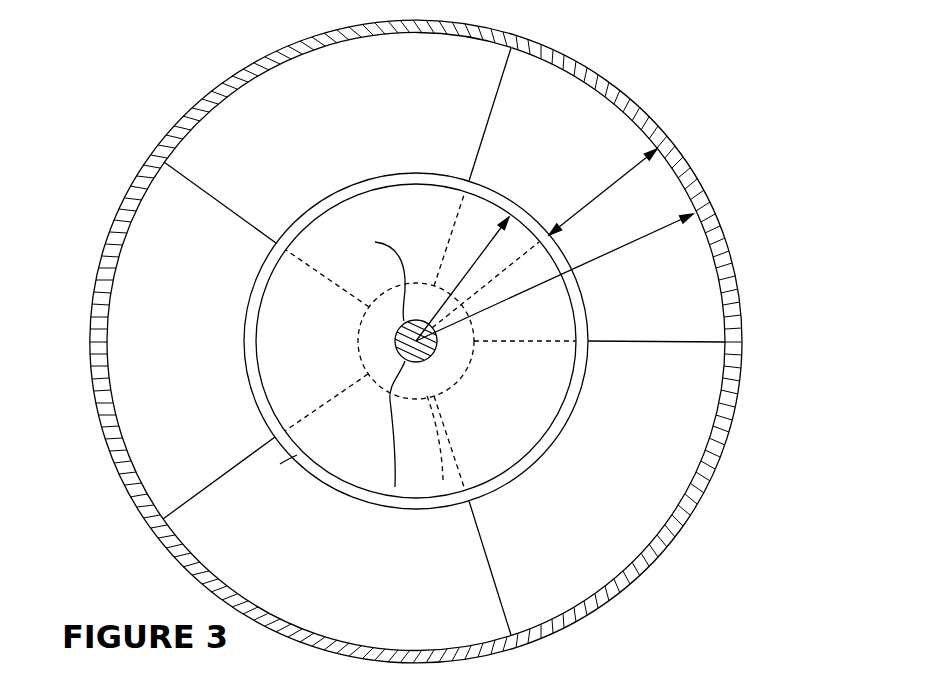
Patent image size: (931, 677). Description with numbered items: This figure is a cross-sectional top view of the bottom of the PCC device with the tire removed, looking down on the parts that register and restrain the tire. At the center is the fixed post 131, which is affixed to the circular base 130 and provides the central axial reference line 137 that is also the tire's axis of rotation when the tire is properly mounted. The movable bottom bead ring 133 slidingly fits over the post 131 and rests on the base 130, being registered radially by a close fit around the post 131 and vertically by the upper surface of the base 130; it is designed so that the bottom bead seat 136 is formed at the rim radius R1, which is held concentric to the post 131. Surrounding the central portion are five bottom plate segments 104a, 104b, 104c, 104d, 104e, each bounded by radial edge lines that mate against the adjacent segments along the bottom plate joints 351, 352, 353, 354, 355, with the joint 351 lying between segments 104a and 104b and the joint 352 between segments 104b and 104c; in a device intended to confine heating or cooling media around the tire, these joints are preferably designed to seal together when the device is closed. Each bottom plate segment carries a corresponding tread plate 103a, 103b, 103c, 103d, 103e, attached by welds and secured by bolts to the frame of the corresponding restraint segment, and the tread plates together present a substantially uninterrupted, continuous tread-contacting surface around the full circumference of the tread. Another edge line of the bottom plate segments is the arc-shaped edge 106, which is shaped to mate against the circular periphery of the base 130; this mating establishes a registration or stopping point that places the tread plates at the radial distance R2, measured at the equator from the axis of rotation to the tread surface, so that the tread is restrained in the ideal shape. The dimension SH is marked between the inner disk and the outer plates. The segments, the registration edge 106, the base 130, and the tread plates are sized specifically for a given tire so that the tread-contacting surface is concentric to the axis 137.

The tread plate 103a is at (233, 597).
The tread plate 103b is at (102, 290).
The tread plate 103c is at (470, 35).
The tread plate 103d is at (725, 237).
The tread plate 103e is at (640, 563).
The bottom plate segment 104a is at (334, 579).
The bottom plate segment 104b is at (180, 338).
The bottom plate segment 104c is at (331, 151).
The bottom plate segment 104d is at (636, 294).
The bottom plate segment 104e is at (582, 474).
The arc-shaped edge 106 is at (443, 480).
The circular base 130 is at (358, 347).
The post 131 is at (395, 487).
The bottom bead ring 133 is at (342, 452).
The bottom bead seat 136 is at (297, 455).
The central axial reference line 137 is at (371, 275).
The bottom plate joint 351 is at (162, 530).
The bottom plate joint 352 is at (201, 178).
The bottom plate joint 353 is at (503, 83).
The bottom plate joint 354 is at (677, 343).
The bottom plate joint 355 is at (499, 604).
The rim radius R1 is at (462, 279).
The radial distance R2 is at (554, 276).
The shelf height SH is at (544, 238).